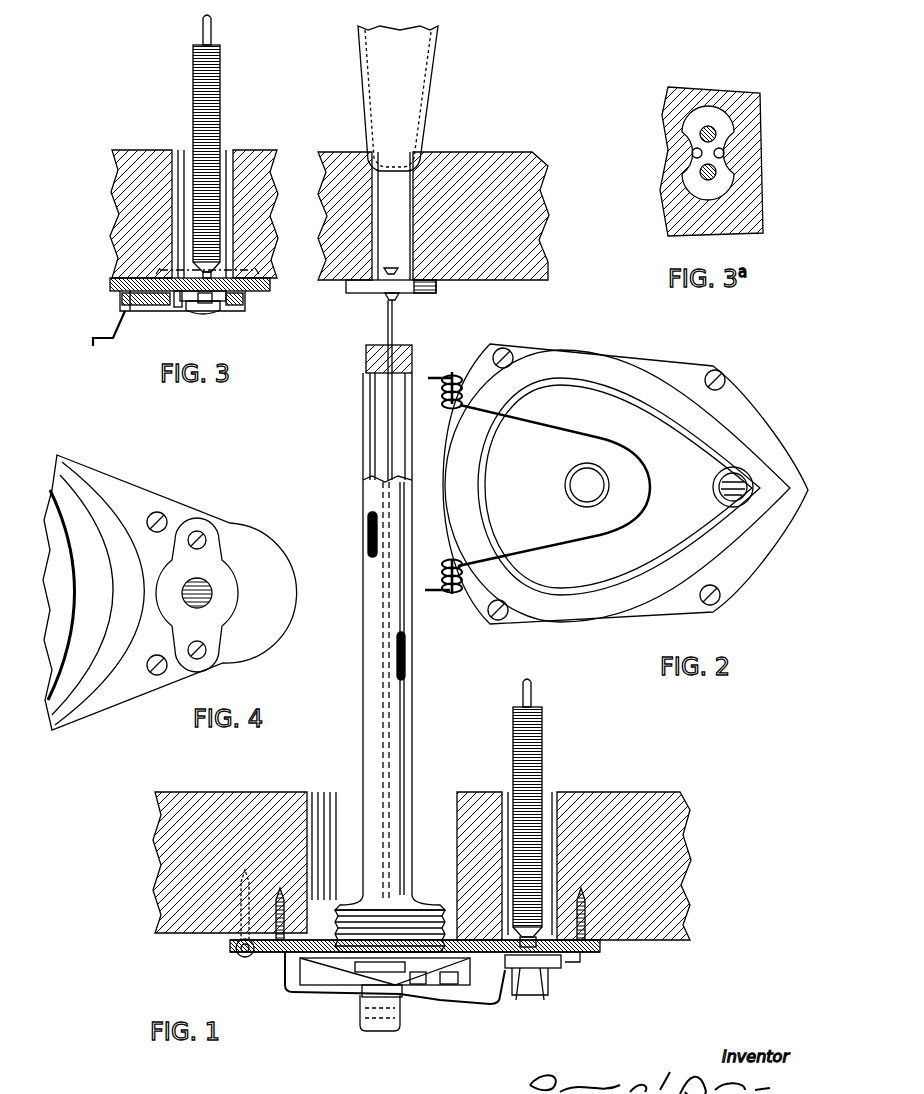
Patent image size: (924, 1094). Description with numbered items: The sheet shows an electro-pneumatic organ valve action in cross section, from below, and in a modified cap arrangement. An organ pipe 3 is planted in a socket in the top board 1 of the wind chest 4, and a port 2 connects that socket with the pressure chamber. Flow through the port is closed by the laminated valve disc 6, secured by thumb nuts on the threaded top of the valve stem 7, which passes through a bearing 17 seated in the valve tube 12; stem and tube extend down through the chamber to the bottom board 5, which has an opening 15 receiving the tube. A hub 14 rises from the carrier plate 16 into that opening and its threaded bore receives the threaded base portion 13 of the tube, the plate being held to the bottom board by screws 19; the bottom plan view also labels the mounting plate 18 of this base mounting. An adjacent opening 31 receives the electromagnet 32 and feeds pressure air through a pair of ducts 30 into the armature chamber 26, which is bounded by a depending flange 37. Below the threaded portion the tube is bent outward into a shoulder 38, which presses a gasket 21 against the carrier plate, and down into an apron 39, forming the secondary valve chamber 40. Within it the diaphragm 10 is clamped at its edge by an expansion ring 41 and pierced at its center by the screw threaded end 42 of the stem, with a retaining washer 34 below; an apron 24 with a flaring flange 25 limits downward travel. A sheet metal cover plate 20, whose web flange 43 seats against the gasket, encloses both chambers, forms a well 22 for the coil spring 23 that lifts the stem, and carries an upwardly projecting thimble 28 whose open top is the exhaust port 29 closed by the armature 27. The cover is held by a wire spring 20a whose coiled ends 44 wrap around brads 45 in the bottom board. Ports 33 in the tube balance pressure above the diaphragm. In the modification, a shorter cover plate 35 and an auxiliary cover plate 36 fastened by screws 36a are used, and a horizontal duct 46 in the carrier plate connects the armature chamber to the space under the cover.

In FIG. 1, the top board 1 is at (488, 152).
In FIG. 1, the port 2 is at (392, 223).
In FIG. 1, the organ pipe 3 is at (412, 98).
In FIG. 1, the wind chest 4 is at (518, 272).
In FIG. 3, the bottom board 5 is at (135, 222).
In FIG. 1, the bottom board 5 is at (620, 805).
In FIG. 3A, the bottom board 5 is at (762, 177).
In FIG. 1, the valve disc 6 is at (438, 290).
In FIG. 1, the valve stem 7 is at (398, 445).
In FIG. 2, the valve stem 7 is at (428, 444).
In FIG. 1, the diaphragm 10 is at (345, 968).
In FIG. 1, the valve tube 12 is at (412, 718).
In FIG. 1, the base portion 13 is at (416, 905).
In FIG. 1, the hub 14 is at (440, 920).
In FIG. 1, the opening 15 is at (435, 815).
In FIG. 3, the carrier plate 16 is at (258, 292).
In FIG. 1, the carrier plate 16 is at (598, 950).
In FIG. 4, the carrier plate 16 is at (136, 697).
In FIG. 1, the bearing 17 is at (398, 352).
In FIG. 1, the mounting plate 18 is at (600, 945).
In FIG. 2, the mounting plate 18 is at (745, 578).
In FIG. 1, the screws 19 is at (593, 924).
In FIG. 2, the screws 19 is at (497, 616).
In FIG. 1, the cover plate 20 is at (283, 986).
In FIG. 2, the cover plate 20 is at (660, 490).
In FIG. 1, the wire spring 20a is at (310, 995).
In FIG. 2, the wire spring 20a is at (590, 437).
In FIG. 1, the gasket 21 is at (590, 956).
In FIG. 1, the well or socket 22 is at (386, 1031).
In FIG. 2, the well or socket 22 is at (565, 486).
In FIG. 1, the coil spring 23 is at (375, 1010).
In FIG. 1, the apron 24 is at (448, 988).
In FIG. 1, the flaring flange 25 is at (420, 988).
In FIG. 3, the armature chamber 26 is at (180, 309).
In FIG. 1, the armature chamber 26 is at (552, 966).
In FIG. 1, the armature 27 is at (530, 1000).
In FIG. 3, the thimble 28 is at (218, 312).
In FIG. 1, the thimble 28 is at (520, 996).
In FIG. 4, the thimble 28 is at (210, 600).
In FIG. 1, the exhaust port 29 is at (540, 990).
In FIG. 1, the air flow ducts 30 is at (538, 944).
In FIG. 3A, the air flow ducts 30 is at (722, 148).
In FIG. 1, the opening 31 is at (548, 815).
In FIG. 3A, the opening 31 is at (728, 158).
In FIG. 1, the electromagnet 32 is at (542, 760).
In FIG. 3A, the electromagnet 32 is at (700, 172).
In FIG. 1, the ports 33 is at (366, 537).
In FIG. 1, the retaining washer 34 is at (372, 975).
In FIG. 3, the cover plate 35 is at (95, 346).
In FIG. 4, the cover plate 35 is at (80, 496).
In FIG. 3, the auxiliary cover plate 36 is at (240, 312).
In FIG. 4, the auxiliary cover plate 36 is at (232, 586).
In FIG. 3, the screws 36a is at (202, 313).
In FIG. 4, the screws 36a is at (200, 530).
In FIG. 1, the flange 37 is at (590, 968).
In FIG. 1, the shoulder 38 is at (470, 1004).
In FIG. 1, the apron 39 is at (492, 1006).
In FIG. 1, the secondary valve chamber 40 is at (360, 986).
In FIG. 1, the expansion ring 41 is at (290, 996).
In FIG. 1, the screw threaded end 42 is at (400, 1000).
In FIG. 1, the web flange 43 is at (243, 958).
In FIG. 2, the coiled ends 44 is at (448, 562).
In FIG. 2, the brads 45 is at (452, 595).
In FIG. 3, the air flow duct 46 is at (155, 312).